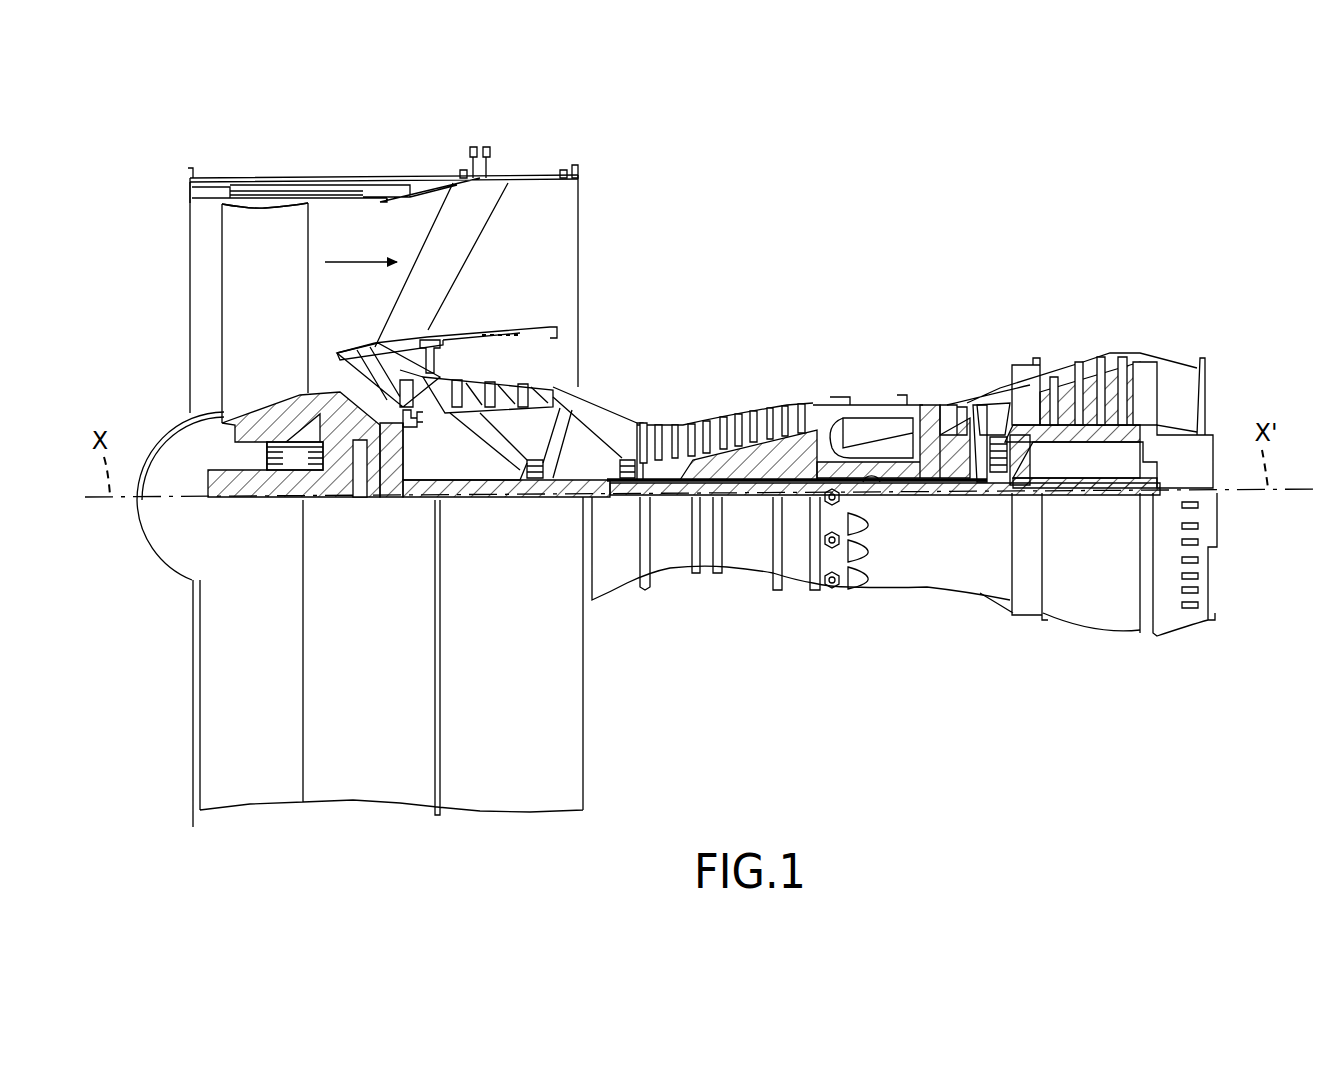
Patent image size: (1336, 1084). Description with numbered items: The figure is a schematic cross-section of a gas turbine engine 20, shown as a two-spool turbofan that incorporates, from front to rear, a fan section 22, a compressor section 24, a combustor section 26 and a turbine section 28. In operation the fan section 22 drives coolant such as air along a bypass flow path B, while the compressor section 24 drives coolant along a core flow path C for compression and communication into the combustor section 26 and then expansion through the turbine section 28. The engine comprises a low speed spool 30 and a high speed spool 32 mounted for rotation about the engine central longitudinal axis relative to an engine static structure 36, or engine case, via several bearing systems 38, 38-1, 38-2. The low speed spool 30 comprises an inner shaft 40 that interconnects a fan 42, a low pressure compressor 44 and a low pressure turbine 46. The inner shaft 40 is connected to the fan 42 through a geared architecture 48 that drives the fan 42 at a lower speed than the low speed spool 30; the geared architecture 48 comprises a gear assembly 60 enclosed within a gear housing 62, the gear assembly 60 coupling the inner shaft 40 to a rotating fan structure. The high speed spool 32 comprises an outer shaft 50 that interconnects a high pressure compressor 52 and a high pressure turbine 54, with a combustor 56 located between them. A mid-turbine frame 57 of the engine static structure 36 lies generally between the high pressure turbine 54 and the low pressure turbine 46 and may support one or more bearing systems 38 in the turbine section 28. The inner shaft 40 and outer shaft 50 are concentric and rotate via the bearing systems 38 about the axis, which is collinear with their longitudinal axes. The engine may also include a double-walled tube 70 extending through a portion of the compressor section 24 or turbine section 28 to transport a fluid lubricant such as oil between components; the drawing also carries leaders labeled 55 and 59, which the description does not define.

The gas turbine engine 20 is at (921, 213).
The fan section 22 is at (428, 156).
The compressor section 24 is at (437, 291).
The combustor section 26 is at (818, 291).
The turbine section 28 is at (1145, 291).
The low speed spool 30 is at (753, 508).
The high speed spool 32 is at (790, 460).
The engine static structure 36 is at (633, 417).
The bearing system 38 is at (983, 483).
The bearing system 38-1 is at (277, 470).
The bearing system 38-2 is at (535, 480).
The inner shaft 40 is at (603, 495).
The fan 42 is at (248, 310).
The low pressure compressor 44 is at (510, 390).
The low pressure turbine 46 is at (1077, 373).
The geared architecture 48 is at (397, 512).
The outer shaft 50 is at (880, 473).
The high pressure compressor 52 is at (732, 460).
The high pressure turbine 54 is at (938, 407).
The turbine static structure 55 is at (963, 407).
The combustor 56 is at (863, 423).
The mid-turbine frame 57 is at (980, 403).
The airfoils 59 is at (1003, 397).
The gear assembly 60 is at (403, 473).
The gear housing 62 is at (397, 435).
The double-walled tube 70 is at (593, 403).
The bypass flow path B is at (350, 263).
The core flow path C is at (328, 372).